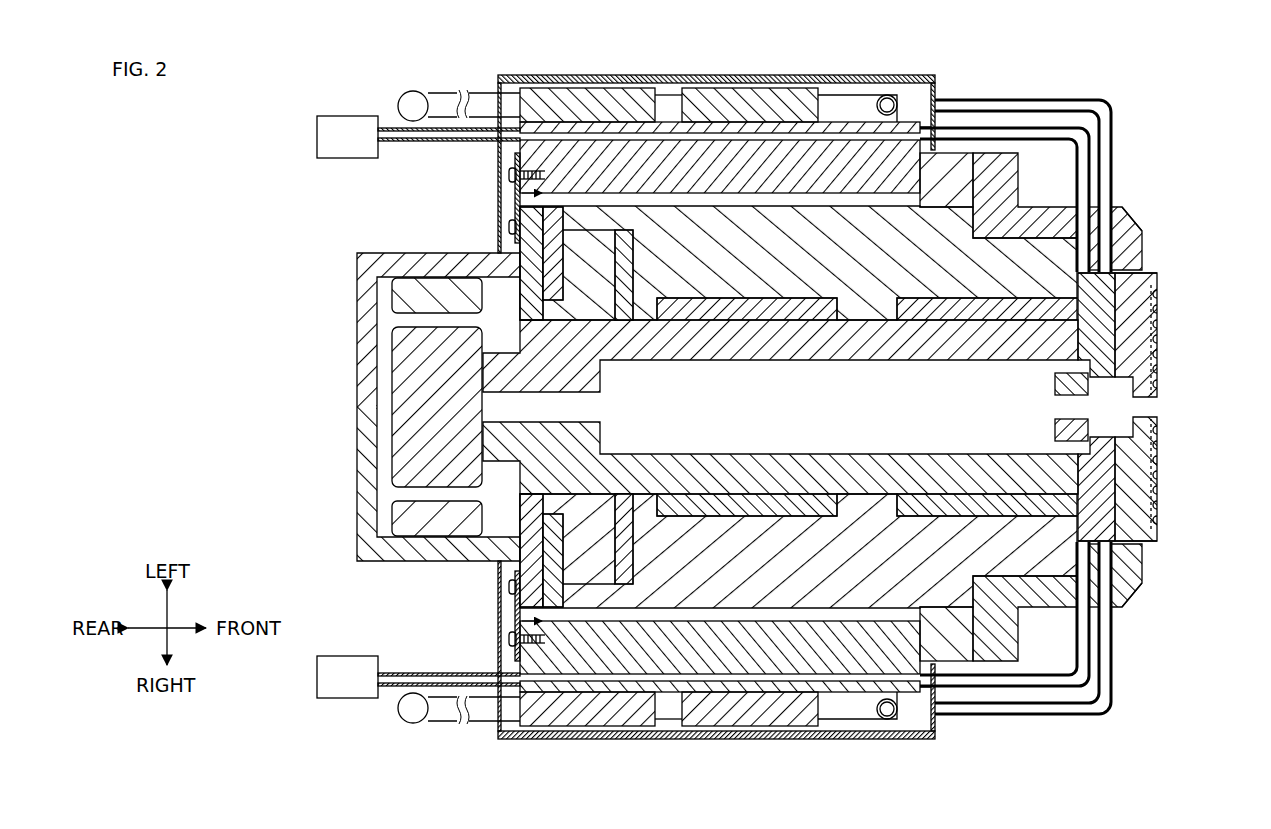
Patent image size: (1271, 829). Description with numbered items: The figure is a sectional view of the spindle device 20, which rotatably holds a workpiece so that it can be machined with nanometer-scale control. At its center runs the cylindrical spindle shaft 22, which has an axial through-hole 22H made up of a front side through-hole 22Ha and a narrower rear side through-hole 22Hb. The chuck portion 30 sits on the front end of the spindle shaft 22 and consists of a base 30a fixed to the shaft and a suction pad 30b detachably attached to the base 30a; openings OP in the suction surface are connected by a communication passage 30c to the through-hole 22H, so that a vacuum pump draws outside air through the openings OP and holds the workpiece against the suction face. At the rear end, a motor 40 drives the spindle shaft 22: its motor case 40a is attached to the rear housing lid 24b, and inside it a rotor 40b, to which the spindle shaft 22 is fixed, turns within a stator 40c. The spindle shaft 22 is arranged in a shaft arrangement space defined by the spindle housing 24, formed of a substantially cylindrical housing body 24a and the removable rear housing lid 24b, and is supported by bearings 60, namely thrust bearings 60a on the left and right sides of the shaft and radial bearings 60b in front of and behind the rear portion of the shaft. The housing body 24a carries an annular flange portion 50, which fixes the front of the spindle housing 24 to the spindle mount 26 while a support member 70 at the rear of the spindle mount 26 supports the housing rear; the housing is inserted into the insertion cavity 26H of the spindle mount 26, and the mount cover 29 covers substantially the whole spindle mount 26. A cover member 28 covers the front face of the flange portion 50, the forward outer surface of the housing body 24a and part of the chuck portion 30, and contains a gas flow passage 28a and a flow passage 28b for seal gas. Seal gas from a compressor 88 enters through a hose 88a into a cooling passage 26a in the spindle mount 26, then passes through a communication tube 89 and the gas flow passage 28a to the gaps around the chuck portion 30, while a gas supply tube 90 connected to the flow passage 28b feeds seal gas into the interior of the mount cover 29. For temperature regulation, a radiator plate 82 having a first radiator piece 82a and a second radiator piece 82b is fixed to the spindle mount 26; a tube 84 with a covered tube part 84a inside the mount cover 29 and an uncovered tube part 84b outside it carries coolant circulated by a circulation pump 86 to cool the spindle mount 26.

The spindle device 20 is at (1238, 63).
The spindle shaft 22 is at (857, 350).
The through-hole 22H is at (635, 772).
The front side through-hole 22Ha is at (630, 612).
The rear side through-hole 22Hb is at (553, 612).
The spindle housing 24 is at (967, 672).
The housing body 24a is at (849, 247).
The rear housing lid 24b is at (532, 225).
The spindle mount 26 is at (782, 162).
The cooling passage 26a is at (808, 133).
The insertion cavity 26H is at (520, 190).
The cover member 28 is at (1040, 218).
The gas flow passage 28a is at (1094, 233).
The flow passage 28b is at (1138, 220).
The mount cover 29 is at (895, 78).
The chuck portion 30 is at (1205, 318).
The base 30a is at (1122, 345).
The suction pad 30b is at (1150, 542).
The communication passage 30c is at (1122, 280).
The motor 40 is at (330, 333).
The motor case 40a is at (367, 362).
The rotor 40b is at (410, 418).
The stator 40c is at (415, 286).
The flange portion 50 is at (958, 172).
The bearings 60 is at (650, 470).
The thrust bearings 60a is at (752, 302).
The radial bearings 60b is at (622, 240).
The support member 70 is at (515, 158).
The radiator plate 82 is at (738, 54).
The first radiator piece 82a is at (641, 90).
The second radiator piece 82b is at (742, 90).
The tube 84 is at (392, 50).
The covered tube part 84a is at (510, 88).
The uncovered tube part 84b is at (446, 97).
The circulation pump 86 is at (398, 101).
The compressor 88 is at (317, 137).
The hose 88a is at (392, 143).
The communication tube 89 is at (995, 130).
The gas supply tube 90 is at (1085, 100).
The openings OP is at (1157, 448).